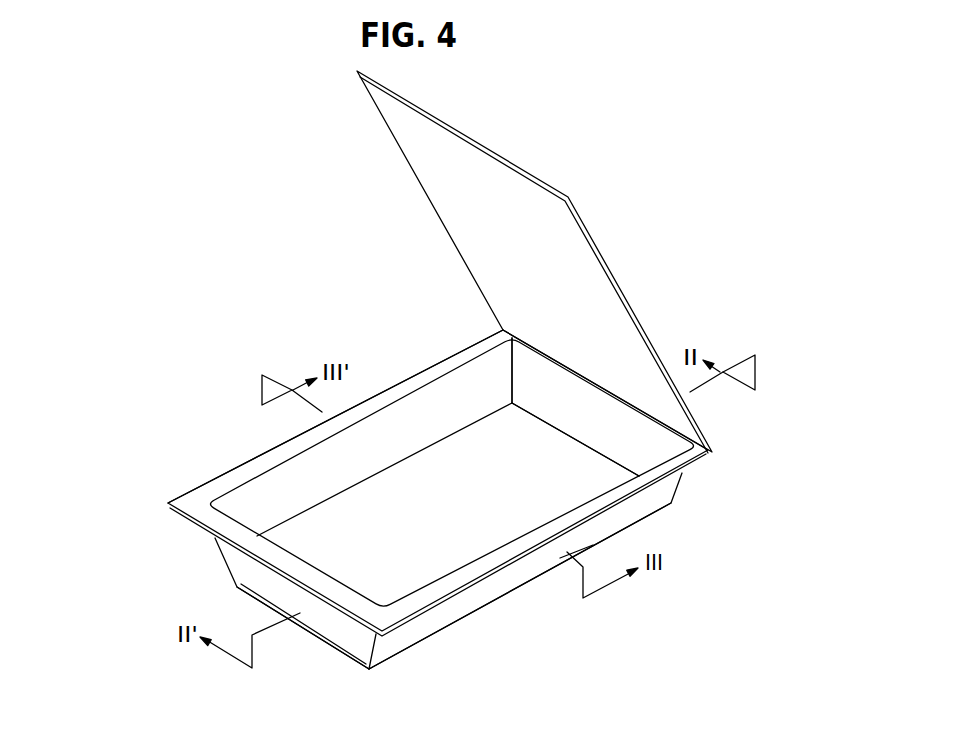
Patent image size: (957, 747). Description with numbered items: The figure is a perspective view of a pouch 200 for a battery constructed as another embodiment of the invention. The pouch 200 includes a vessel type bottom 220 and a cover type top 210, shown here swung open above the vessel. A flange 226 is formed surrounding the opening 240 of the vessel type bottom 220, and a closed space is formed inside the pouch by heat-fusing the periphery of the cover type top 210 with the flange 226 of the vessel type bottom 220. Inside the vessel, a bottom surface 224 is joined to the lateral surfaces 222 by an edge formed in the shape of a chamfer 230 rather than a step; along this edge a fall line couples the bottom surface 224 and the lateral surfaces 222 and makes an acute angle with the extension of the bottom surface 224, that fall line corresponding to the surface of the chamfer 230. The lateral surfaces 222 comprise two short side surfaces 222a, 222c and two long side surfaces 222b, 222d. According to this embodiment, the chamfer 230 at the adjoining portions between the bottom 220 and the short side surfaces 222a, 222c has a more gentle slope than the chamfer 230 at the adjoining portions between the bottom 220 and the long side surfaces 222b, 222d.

The pouch 200 is at (243, 255).
The cover type top 210 is at (397, 150).
The vessel type bottom 220 is at (82, 491).
The lateral surfaces 222 is at (233, 573).
The short side surface 222a is at (323, 623).
The long side surface 222b is at (488, 585).
The short side surface 222c is at (645, 445).
The long side surface 222d is at (485, 383).
The bottom surface 224 is at (300, 545).
The flange 226 is at (193, 501).
The chamfer 230 is at (418, 445).
The opening 240 is at (257, 461).